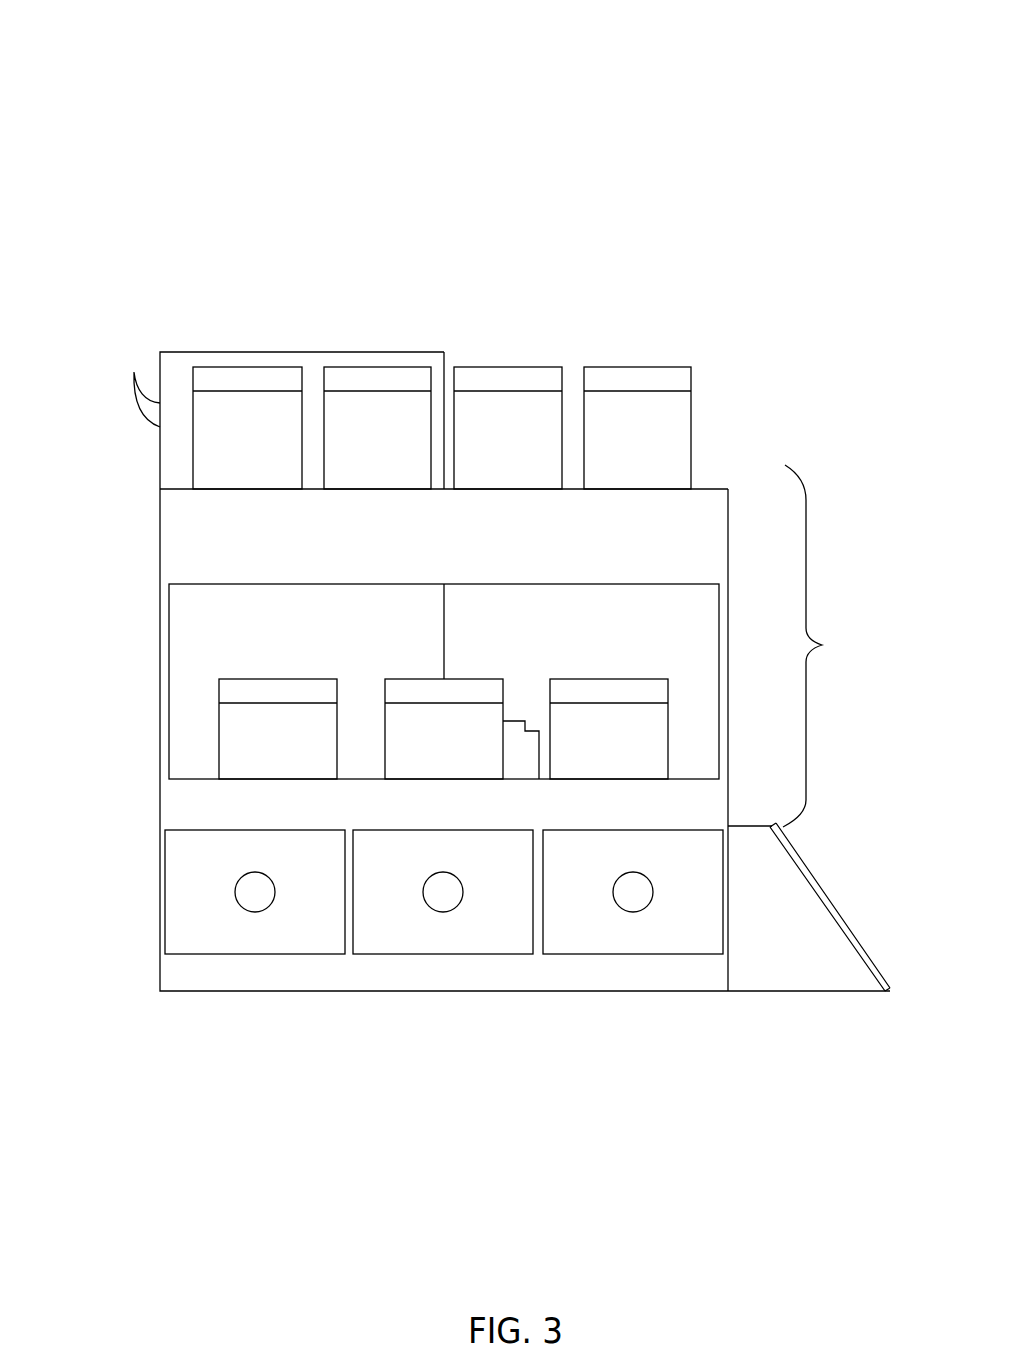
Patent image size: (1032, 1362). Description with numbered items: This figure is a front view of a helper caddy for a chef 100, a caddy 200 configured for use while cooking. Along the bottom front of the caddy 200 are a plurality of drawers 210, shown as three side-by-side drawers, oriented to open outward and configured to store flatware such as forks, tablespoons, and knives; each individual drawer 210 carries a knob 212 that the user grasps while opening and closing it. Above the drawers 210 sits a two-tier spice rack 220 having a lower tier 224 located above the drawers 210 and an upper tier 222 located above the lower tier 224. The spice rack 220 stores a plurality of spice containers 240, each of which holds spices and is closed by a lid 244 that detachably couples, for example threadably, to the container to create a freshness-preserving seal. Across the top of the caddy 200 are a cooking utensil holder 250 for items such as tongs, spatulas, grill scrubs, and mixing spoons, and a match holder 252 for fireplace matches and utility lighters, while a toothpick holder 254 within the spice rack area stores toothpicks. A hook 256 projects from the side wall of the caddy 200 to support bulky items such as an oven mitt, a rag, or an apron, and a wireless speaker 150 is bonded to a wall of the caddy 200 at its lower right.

The helper caddy for a chef 100 is at (132, 175).
The wireless speaker 150 is at (808, 923).
The caddy 200 is at (658, 979).
The plurality of drawers 210 is at (307, 954).
The knob 212 is at (251, 890).
The spice rack 220 is at (830, 646).
The upper tier 222 is at (190, 534).
The lower tier 224 is at (190, 793).
The spice containers 240 is at (461, 733).
The lid 244 is at (622, 375).
The cooking utensil holder 250 is at (310, 355).
The match holder 252 is at (398, 360).
The toothpick holder 254 is at (526, 758).
The hook 256 is at (148, 408).